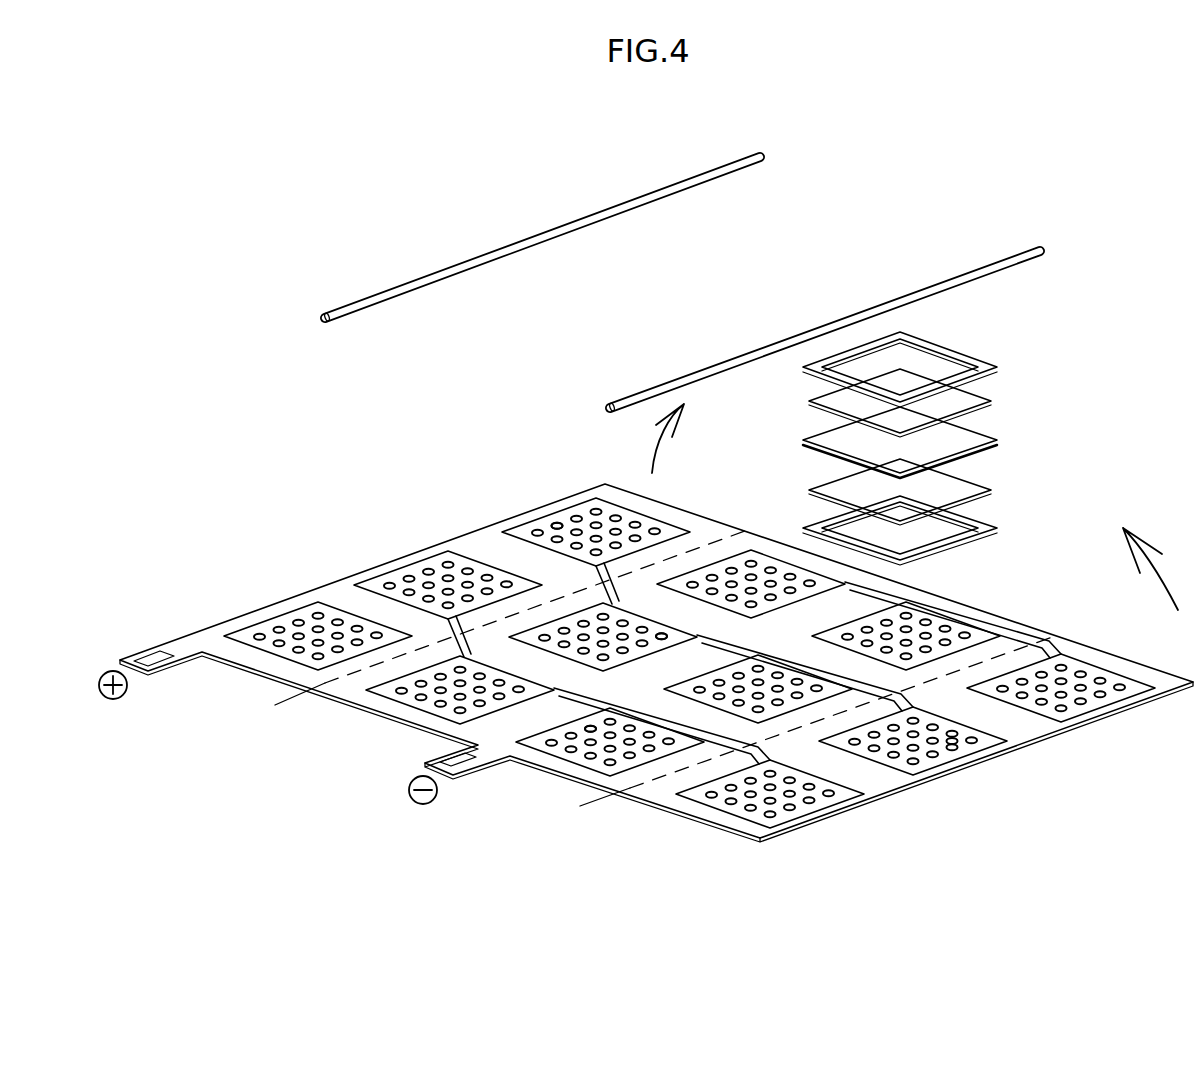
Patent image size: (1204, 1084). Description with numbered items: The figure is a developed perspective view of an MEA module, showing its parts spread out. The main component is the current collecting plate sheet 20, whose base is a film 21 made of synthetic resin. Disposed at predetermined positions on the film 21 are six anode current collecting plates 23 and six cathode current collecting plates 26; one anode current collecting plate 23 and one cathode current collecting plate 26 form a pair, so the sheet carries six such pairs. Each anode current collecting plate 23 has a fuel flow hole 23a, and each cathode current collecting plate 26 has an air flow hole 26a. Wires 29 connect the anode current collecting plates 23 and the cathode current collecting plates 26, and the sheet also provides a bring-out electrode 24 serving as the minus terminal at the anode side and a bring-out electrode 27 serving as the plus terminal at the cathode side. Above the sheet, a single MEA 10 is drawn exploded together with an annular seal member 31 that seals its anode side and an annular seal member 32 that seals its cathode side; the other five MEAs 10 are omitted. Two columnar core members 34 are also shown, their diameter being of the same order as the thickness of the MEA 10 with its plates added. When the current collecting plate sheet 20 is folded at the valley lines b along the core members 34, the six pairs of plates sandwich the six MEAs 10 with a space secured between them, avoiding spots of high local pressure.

The current collecting plate sheet 20 is at (226, 197).
The film 21 is at (336, 594).
The anode current collecting plate 23 is at (680, 572).
The fuel flow hole 23a is at (668, 637).
The bring-out electrode 24 is at (470, 762).
The cathode current collecting plate 26 is at (645, 520).
The air flow hole 26a is at (555, 524).
The bring-out electrode 27 is at (160, 645).
The wire 29 is at (598, 578).
The MEA 10 is at (1000, 392).
The annular seal member 31 is at (1003, 522).
The annular seal member 32 is at (1003, 360).
The core member 34 is at (677, 183).
The valley line b is at (655, 679).